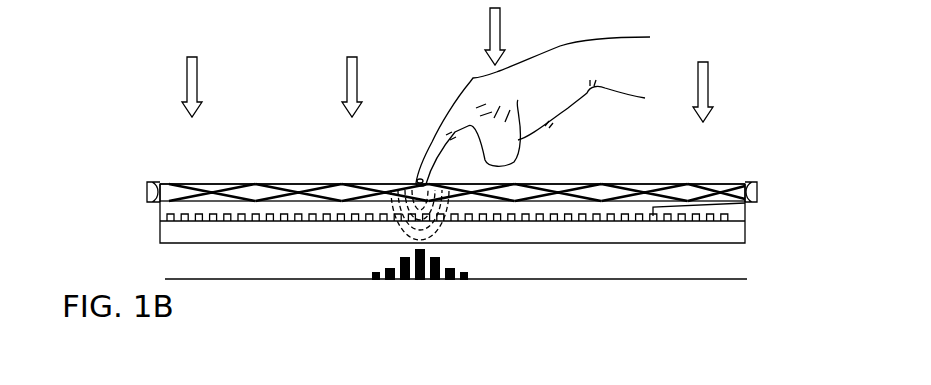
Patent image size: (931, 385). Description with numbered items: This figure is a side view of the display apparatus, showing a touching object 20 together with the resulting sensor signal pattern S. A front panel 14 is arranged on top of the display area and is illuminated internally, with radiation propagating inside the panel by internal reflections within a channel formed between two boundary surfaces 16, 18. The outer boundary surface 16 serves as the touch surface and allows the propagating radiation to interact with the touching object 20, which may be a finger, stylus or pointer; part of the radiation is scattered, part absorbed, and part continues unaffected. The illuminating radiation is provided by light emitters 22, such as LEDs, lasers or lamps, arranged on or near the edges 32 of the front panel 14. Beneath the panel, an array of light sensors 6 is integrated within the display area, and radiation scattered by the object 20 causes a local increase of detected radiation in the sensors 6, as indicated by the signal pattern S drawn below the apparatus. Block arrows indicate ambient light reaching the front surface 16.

The front panel 14 is at (183, 181).
The outer boundary surface 16 is at (645, 184).
The boundary surface 18 is at (745, 201).
The touching object 20 is at (432, 143).
The light emitters 22 is at (147, 192).
The edges 32 is at (154, 202).
The light sensors 6 is at (536, 222).
The signal pattern S is at (710, 278).